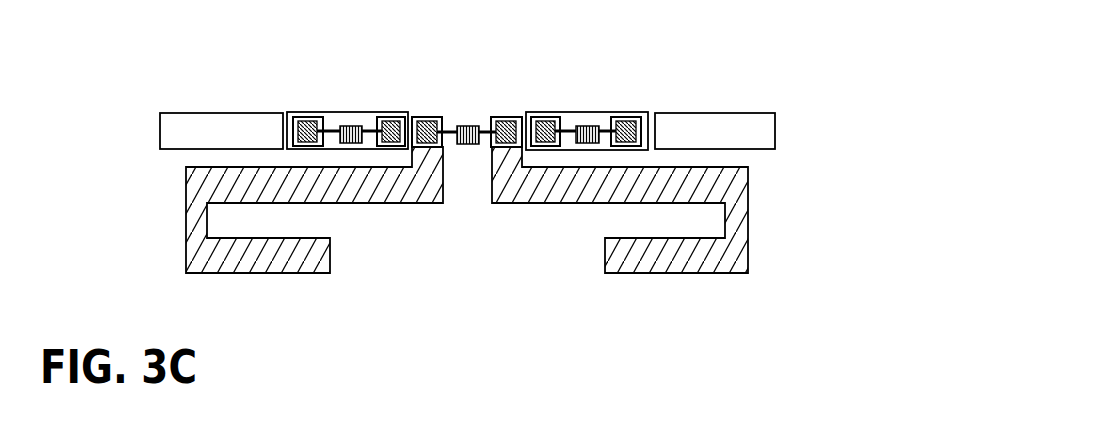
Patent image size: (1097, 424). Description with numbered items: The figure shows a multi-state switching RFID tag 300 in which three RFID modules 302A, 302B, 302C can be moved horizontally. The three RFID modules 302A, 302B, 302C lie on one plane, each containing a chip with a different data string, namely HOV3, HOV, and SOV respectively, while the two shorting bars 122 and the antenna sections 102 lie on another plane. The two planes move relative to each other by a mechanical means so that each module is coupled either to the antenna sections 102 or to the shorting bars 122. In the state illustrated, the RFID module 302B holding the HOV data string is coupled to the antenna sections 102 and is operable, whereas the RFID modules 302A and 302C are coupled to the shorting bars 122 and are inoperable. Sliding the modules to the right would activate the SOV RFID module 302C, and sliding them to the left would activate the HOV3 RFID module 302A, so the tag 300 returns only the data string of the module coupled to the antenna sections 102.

The multi-state switching RFID tag 300 is at (783, 67).
The shorting bars 122 is at (208, 113).
The RFID module 302C is at (361, 156).
The RFID module 302B is at (463, 153).
The RFID module 302A is at (571, 156).
The antenna sections 102 is at (616, 283).